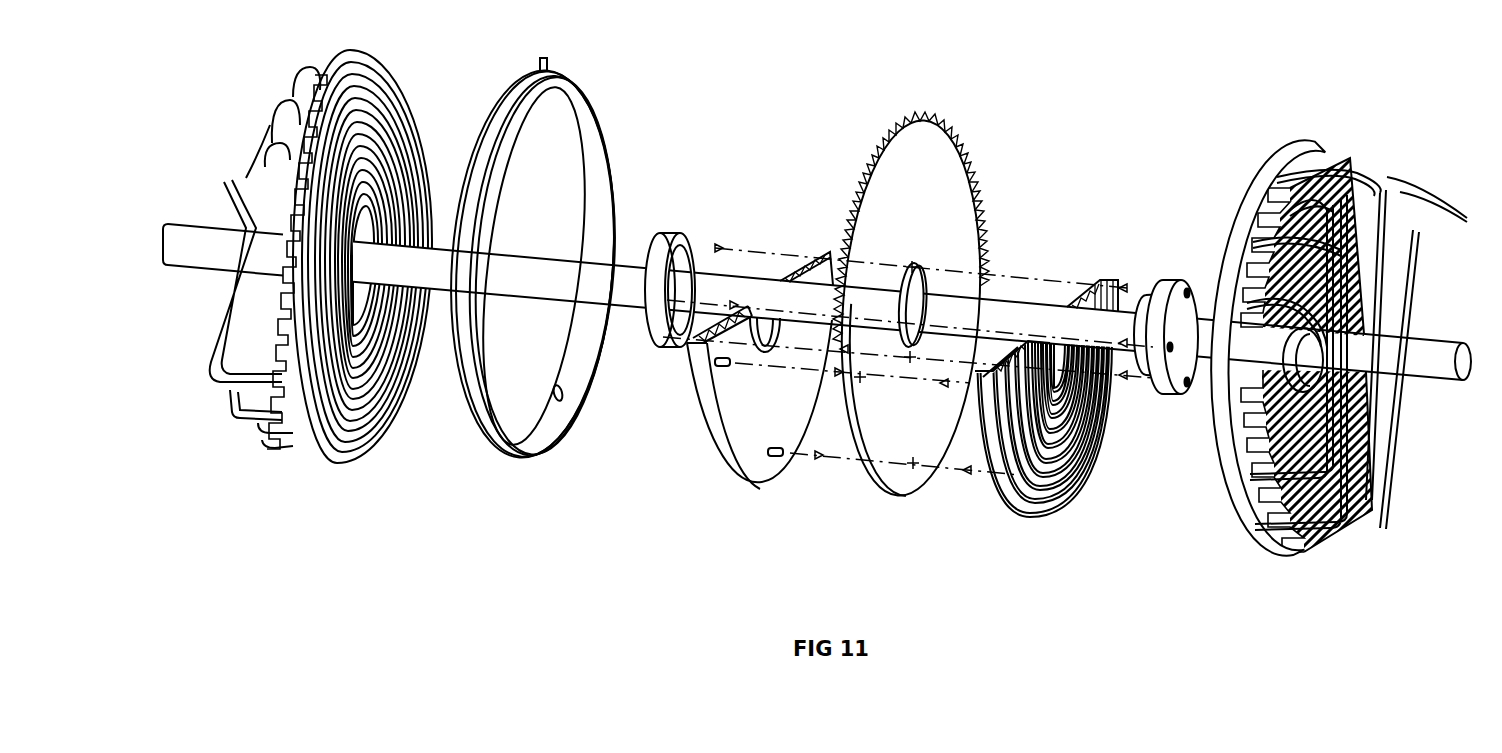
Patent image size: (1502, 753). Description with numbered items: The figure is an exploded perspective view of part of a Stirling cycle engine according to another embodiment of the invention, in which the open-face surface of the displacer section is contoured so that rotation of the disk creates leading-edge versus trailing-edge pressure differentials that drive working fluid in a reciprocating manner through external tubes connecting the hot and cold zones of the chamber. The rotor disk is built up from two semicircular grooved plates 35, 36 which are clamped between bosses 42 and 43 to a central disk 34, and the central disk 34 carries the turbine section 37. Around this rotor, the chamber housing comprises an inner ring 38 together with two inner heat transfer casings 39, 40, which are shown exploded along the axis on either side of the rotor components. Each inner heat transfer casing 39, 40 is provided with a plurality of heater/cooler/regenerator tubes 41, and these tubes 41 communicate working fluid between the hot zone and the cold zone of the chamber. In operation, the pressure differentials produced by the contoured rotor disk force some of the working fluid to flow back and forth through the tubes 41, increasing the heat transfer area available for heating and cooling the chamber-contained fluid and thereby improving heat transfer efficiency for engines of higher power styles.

The central disk 34 is at (914, 427).
The semicircular grooved plate 35 is at (710, 455).
The semicircular grooved plate 36 is at (1005, 490).
The turbine section 37 is at (947, 178).
The inner ring 38 is at (503, 112).
The inner heat transfer casing 39 is at (380, 50).
The inner heat transfer casing 40 is at (1283, 160).
The heater/cooler/regenerator tubes 41 is at (262, 120).
The boss 42 is at (655, 330).
The boss 43 is at (1172, 285).